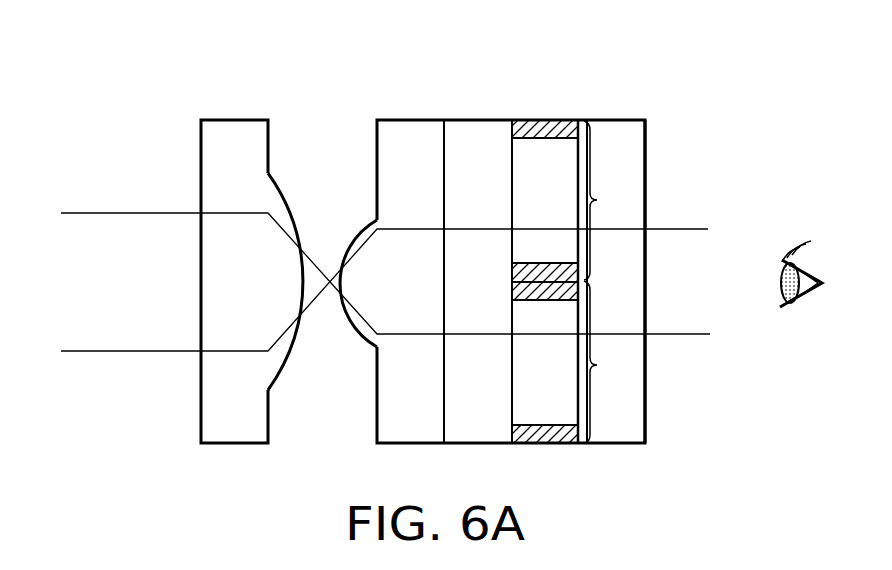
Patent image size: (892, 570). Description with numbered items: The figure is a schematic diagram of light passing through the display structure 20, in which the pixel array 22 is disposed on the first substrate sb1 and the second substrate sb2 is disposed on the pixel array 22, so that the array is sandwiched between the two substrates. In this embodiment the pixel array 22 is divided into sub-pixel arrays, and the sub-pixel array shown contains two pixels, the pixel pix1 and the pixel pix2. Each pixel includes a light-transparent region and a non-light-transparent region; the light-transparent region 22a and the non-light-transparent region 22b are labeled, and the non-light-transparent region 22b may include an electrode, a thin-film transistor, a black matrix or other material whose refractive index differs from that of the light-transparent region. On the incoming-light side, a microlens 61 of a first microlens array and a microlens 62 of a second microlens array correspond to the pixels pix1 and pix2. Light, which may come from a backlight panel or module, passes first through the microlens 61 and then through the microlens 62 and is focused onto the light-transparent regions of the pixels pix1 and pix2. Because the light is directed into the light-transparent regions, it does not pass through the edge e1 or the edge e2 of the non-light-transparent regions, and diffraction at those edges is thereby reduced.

The microlens 61 is at (288, 363).
The microlens 62 is at (355, 328).
The display structure 20 is at (737, 493).
The pixel array 22 is at (547, 114).
The light-transparent region 22a is at (522, 168).
The non-light-transparent region 22b is at (567, 127).
The first substrate sb1 is at (613, 120).
The second substrate sb2 is at (477, 120).
The edge e1 is at (547, 140).
The edge e2 is at (543, 423).
The pixel pix1 is at (597, 200).
The pixel pix2 is at (597, 365).